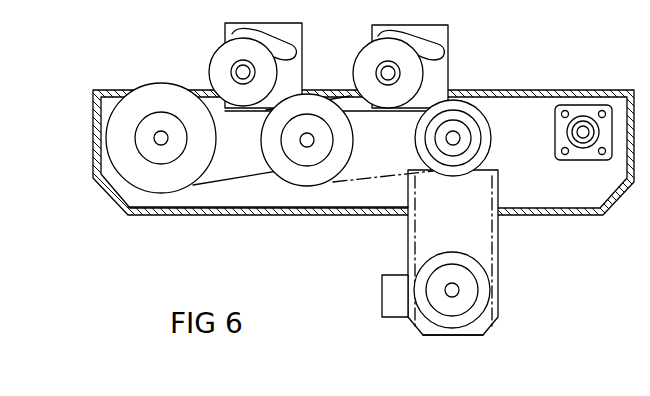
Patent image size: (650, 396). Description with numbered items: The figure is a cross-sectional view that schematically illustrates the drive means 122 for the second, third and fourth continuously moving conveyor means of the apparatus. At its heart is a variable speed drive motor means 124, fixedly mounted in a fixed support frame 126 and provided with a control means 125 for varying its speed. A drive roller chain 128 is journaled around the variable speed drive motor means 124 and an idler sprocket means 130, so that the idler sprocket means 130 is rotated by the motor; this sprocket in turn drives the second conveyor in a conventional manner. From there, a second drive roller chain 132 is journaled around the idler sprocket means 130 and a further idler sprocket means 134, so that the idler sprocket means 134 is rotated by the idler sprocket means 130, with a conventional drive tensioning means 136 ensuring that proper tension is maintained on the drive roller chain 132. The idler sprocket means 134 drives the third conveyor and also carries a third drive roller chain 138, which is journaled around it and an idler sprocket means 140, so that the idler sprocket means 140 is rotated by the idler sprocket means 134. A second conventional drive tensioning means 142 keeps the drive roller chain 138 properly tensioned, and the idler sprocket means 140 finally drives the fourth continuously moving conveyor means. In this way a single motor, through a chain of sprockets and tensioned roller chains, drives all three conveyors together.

The drive means 122 is at (157, 233).
The variable speed drive motor means 124 is at (477, 295).
The control means 125 is at (390, 305).
The fixed support frame 126 is at (473, 325).
The drive roller chain 128 is at (494, 238).
The idler sprocket means 130 is at (478, 115).
The drive roller chain 132 is at (350, 183).
The idler sprocket means 134 is at (305, 178).
The drive tensioning means 136 is at (412, 74).
The drive roller chain 138 is at (206, 214).
The idler sprocket means 140 is at (118, 120).
The drive tensioning means 142 is at (218, 64).